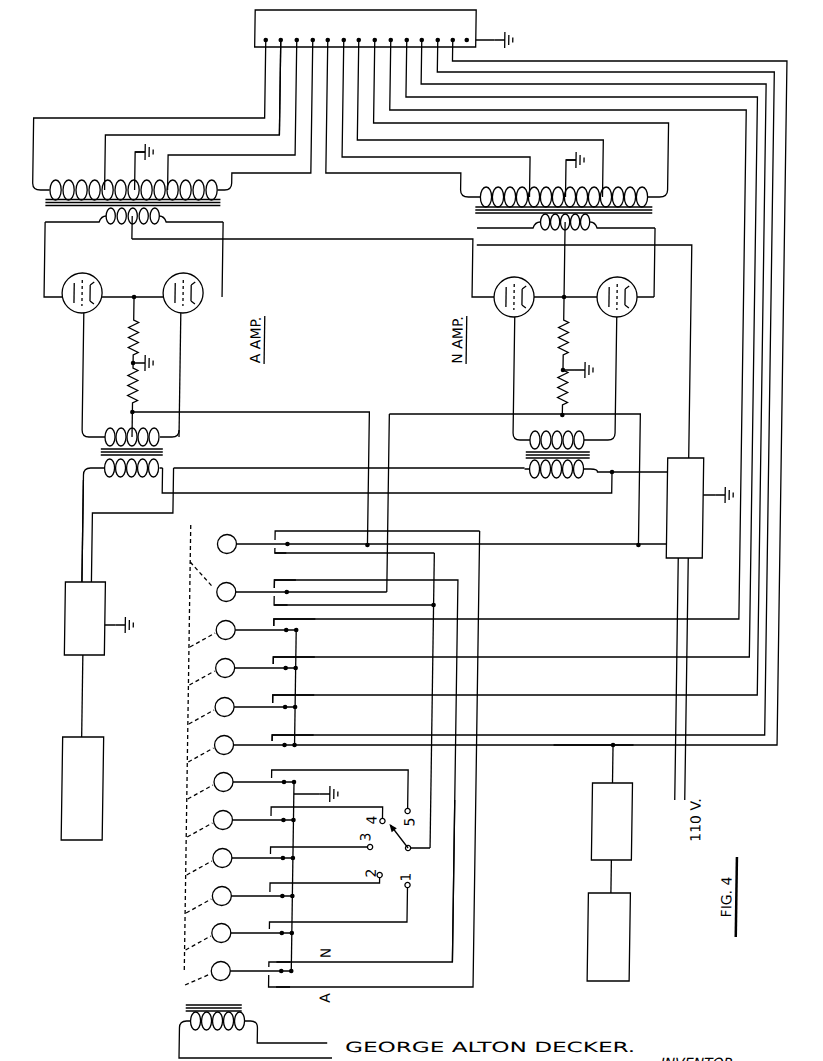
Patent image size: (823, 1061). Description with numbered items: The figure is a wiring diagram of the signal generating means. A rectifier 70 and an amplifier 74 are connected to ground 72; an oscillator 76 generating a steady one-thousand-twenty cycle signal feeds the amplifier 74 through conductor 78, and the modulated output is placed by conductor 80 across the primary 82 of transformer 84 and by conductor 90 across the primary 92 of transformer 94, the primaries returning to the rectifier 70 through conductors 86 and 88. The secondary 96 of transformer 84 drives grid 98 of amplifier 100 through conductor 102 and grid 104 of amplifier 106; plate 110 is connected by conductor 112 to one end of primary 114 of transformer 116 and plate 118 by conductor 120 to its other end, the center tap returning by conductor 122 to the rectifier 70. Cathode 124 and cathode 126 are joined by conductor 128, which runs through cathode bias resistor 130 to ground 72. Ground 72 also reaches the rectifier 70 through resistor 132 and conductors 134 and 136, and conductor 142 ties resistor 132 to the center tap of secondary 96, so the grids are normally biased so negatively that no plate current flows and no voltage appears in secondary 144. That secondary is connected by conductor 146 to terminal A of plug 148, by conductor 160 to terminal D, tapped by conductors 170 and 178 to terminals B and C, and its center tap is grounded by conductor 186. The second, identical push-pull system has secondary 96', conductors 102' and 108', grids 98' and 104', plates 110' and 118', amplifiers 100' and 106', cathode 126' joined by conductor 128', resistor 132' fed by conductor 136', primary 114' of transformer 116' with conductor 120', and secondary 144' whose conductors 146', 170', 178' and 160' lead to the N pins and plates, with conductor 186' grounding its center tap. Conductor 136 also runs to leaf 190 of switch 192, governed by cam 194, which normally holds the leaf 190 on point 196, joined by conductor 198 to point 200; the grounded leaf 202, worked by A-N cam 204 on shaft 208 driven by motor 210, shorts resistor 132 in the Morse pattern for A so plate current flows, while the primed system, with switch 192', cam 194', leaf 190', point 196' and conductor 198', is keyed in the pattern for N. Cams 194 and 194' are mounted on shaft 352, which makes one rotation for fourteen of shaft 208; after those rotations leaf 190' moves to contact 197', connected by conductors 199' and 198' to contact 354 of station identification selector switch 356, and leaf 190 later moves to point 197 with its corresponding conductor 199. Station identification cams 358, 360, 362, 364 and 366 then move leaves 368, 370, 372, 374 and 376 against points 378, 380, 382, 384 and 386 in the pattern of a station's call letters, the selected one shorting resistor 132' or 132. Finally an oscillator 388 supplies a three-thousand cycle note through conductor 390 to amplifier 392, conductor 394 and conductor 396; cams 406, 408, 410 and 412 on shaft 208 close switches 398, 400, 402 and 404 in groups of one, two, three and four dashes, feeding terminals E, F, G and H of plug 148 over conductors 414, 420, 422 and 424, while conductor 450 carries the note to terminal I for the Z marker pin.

The plug 148 is at (254, 43).
The conductor 146 is at (149, 115).
The secondary 144 is at (176, 120).
The conductor 170 is at (179, 115).
The conductor 186 is at (125, 168).
The conductor 178 is at (232, 115).
The transformer 116 is at (117, 210).
The primary 114 is at (134, 228).
The conductor 112 is at (42, 250).
The conductor 120 is at (195, 253).
The conductor 122 is at (294, 238).
The grid 98 is at (82, 279).
The plate 110 is at (56, 308).
The amplifier 100 is at (65, 325).
The cathode 124 is at (96, 296).
The conductor 128 is at (133, 314).
The cathode 126 is at (164, 288).
The amplifier 106 is at (189, 281).
The grid 104 is at (199, 320).
The plate 118 is at (206, 371).
The cathode bias resistor 130 is at (129, 341).
The resistor 132 is at (142, 388).
The ground 72 is at (150, 156).
The secondary 96 is at (131, 423).
The conductor 142 is at (137, 419).
The conductor 102 is at (63, 375).
The transformer 84 is at (80, 452).
The primary 82 is at (128, 474).
The conductor 80 is at (82, 519).
The conductor 90 is at (350, 468).
The conductor 86 is at (348, 494).
The conductor 134 is at (356, 412).
The conductor 136' is at (525, 483).
The conductor 136 is at (451, 546).
The conductor 88 is at (655, 469).
The rectifier 70 is at (708, 477).
The transformer 94 is at (524, 455).
The primary 92 is at (546, 480).
The secondary 96' is at (555, 418).
The conductor 102' is at (510, 378).
The conductor 108' is at (615, 378).
The grid 98' is at (518, 313).
The plate 110' is at (490, 313).
The amplifier 100' is at (507, 323).
The conductor 128' is at (565, 283).
The cathode 126' is at (566, 278).
The amplifier 106' is at (607, 311).
The grid 104' is at (635, 320).
The plate 118' is at (649, 321).
The resistor 132' is at (555, 358).
The primary 114' is at (565, 257).
The transformer 116' is at (539, 210).
The conductor 146' is at (404, 127).
The secondary 144' is at (564, 171).
The conductor 160' is at (534, 118).
The conductor 160 is at (271, 121).
The conductor 170' is at (439, 118).
The conductor 186' is at (559, 178).
The conductor 178' is at (497, 118).
The conductor 120' is at (584, 334).
The amplifier 74 is at (72, 620).
The conductor 78 is at (86, 702).
The oscillator 76 is at (70, 759).
The conductor 424 is at (600, 618).
The conductor 422 is at (601, 656).
The conductor 420 is at (602, 694).
The conductor 414 is at (603, 734).
The conductor 450 is at (712, 748).
The conductor 396 is at (563, 750).
The conductor 394 is at (625, 768).
The amplifier 392 is at (598, 815).
The conductor 390 is at (623, 872).
The oscillator 388 is at (595, 935).
The leaf 190 is at (253, 531).
The cam 194 is at (338, 524).
The switch 192 is at (258, 527).
The point 196 is at (345, 531).
The point 197 is at (284, 563).
The conductor 199 is at (415, 700).
The conductor 199' is at (363, 771).
The conductor 198 is at (393, 759).
The conductor 198' is at (374, 867).
The leaf 190' is at (299, 577).
The cam 194' is at (241, 596).
The switch 192' is at (258, 576).
The point 196' is at (347, 580).
The contact 197' is at (269, 613).
The shaft 352 is at (190, 556).
The cam 412 is at (221, 627).
The switch 404 is at (275, 627).
The cam 410 is at (221, 662).
The switch 402 is at (275, 664).
The cam 408 is at (221, 700).
The switch 400 is at (275, 702).
The cam 406 is at (221, 738).
The switch 398 is at (275, 741).
The station identification cam 366 is at (221, 778).
The leaf 376 is at (252, 786).
The point 386 is at (276, 773).
The station identification cam 364 is at (221, 816).
The leaf 374 is at (252, 823).
The point 384 is at (276, 809).
The station identification cam 362 is at (221, 852).
The leaf 372 is at (252, 861).
The point 382 is at (276, 849).
The station identification cam 360 is at (221, 890).
The leaf 370 is at (252, 898).
The point 380 is at (276, 887).
The station identification cam 358 is at (221, 928).
The leaf 368 is at (252, 936).
The point 378 is at (276, 925).
The A-N cam 204 is at (221, 973).
The leaf 202 is at (252, 974).
The point 200 is at (273, 963).
The shaft 208 is at (303, 910).
The motor 210 is at (188, 1007).
The contact 354 is at (420, 845).
The station identification selector switch 356 is at (424, 862).